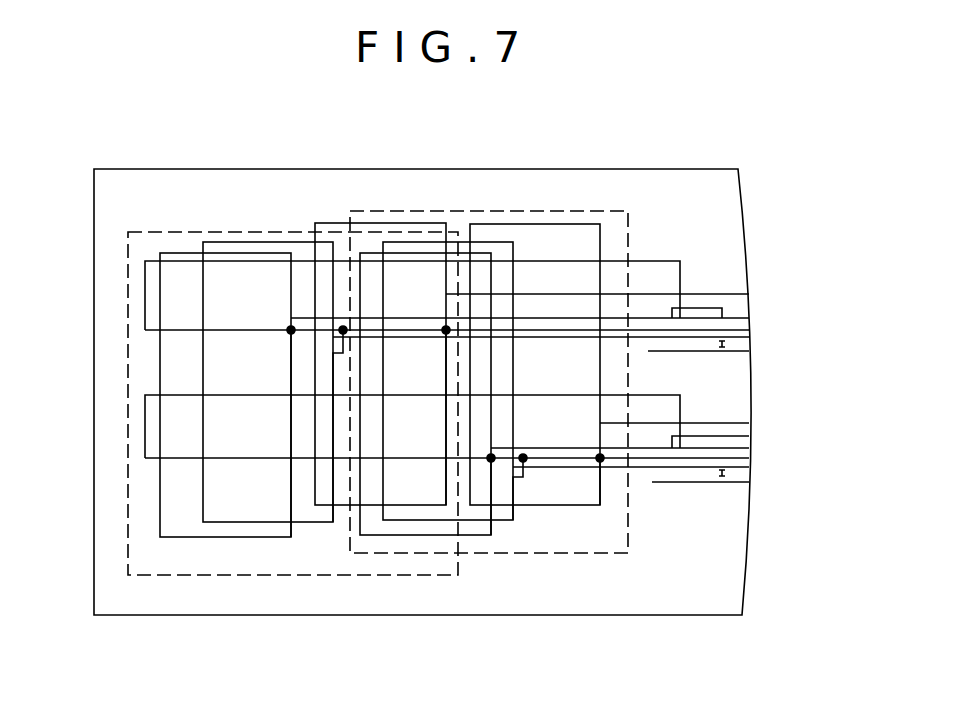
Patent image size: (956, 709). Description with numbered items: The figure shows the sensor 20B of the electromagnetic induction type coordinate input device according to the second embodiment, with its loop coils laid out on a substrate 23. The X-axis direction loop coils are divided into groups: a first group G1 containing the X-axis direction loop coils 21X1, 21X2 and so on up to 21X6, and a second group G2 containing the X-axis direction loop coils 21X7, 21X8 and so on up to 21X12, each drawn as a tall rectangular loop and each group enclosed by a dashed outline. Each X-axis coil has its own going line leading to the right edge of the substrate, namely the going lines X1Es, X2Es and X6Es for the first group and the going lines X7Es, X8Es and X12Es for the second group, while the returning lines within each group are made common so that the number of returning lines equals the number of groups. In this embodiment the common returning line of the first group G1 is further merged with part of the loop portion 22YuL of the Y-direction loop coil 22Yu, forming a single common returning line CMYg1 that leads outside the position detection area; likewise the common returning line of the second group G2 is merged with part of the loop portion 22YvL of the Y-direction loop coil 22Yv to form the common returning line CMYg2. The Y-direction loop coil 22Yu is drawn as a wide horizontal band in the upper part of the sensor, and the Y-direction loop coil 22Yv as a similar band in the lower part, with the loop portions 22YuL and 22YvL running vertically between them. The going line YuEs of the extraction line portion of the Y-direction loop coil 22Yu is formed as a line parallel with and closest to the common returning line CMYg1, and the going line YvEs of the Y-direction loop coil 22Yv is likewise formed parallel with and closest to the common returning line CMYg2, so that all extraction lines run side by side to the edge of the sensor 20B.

The sensor 20B is at (122, 157).
The substrate 23 is at (122, 592).
The group G1 is at (208, 575).
The group G2 is at (498, 553).
The Y-direction loop coil 22Yu is at (237, 262).
The loop portion 22YuL is at (272, 262).
The Y-direction loop coil 22Yv is at (258, 460).
The loop portion 22YvL is at (280, 460).
The X-axis direction loop coil 21X1 is at (160, 302).
The X-axis direction loop coil 21X2 is at (203, 358).
The X-axis direction loop coil 21X6 is at (315, 440).
The X-axis direction loop coil 21X7 is at (367, 253).
The X-axis direction loop coil 21X8 is at (523, 137).
The X-axis direction loop coil 21X12 is at (565, 224).
The going line X1Es is at (728, 308).
The going line X2Es is at (728, 338).
The going line X6Es is at (728, 294).
The going line X7Es is at (730, 433).
The going line X8Es is at (728, 467).
The going line X12Es is at (727, 423).
The going line YuEs is at (737, 327).
The going line YvEs is at (730, 446).
The common returning line CMYg1 is at (730, 338).
The common returning line CMYg2 is at (730, 457).